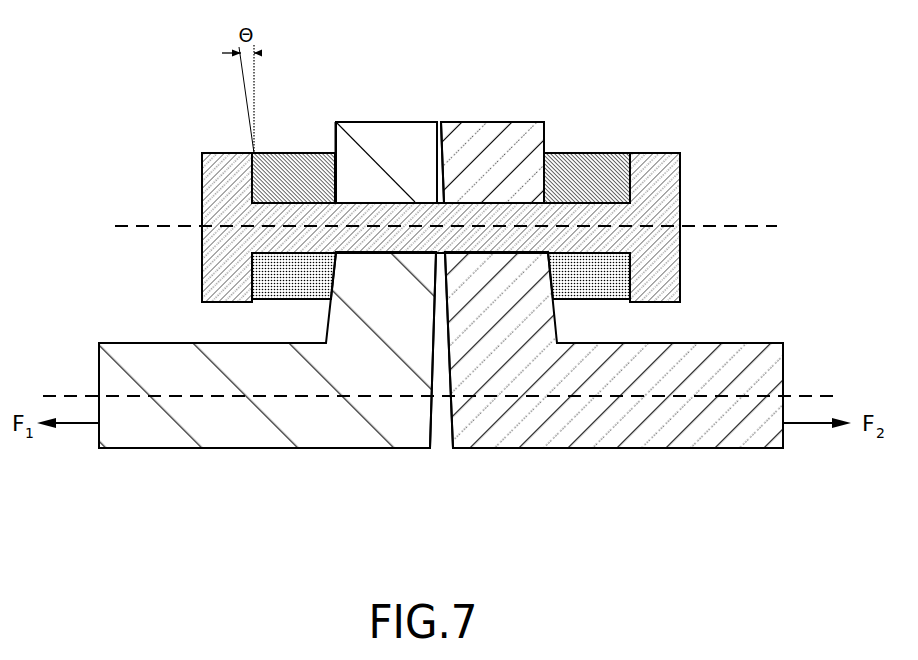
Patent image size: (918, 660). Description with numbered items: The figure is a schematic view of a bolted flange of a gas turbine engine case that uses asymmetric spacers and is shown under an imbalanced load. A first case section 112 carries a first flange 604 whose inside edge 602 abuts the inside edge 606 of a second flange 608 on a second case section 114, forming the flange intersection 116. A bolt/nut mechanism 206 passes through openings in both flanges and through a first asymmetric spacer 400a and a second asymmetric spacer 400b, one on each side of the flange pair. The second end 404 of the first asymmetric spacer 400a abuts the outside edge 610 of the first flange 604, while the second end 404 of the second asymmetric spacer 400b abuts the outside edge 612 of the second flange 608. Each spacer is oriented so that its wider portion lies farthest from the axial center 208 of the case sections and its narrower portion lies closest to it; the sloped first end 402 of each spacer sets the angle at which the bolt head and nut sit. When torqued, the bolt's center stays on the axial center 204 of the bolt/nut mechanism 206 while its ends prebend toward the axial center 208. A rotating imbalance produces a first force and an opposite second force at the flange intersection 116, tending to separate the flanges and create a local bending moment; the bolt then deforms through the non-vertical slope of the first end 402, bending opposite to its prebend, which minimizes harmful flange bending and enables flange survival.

The first case section 112 is at (127, 371).
The second case section 114 is at (747, 374).
The flange intersection 116 is at (438, 155).
The axial center of the bolt/nut mechanism 204 is at (446, 188).
The bolt/nut mechanism 206 is at (661, 157).
The axial center of the first and second case sections 208 is at (812, 396).
The first asymmetric spacer 400a is at (299, 147).
The second asymmetric spacer 400b is at (614, 148).
The first end of the asymmetric spacer 402 is at (253, 153).
The second end of the asymmetric spacer 404 is at (335, 153).
The inside edge of the first flange 602 is at (387, 127).
The first flange 604 is at (365, 143).
The inside edge of the second flange 606 is at (462, 157).
The second flange 608 is at (543, 150).
The outside edge of the first flange 610 is at (327, 322).
The outside edge of the second flange 612 is at (557, 327).